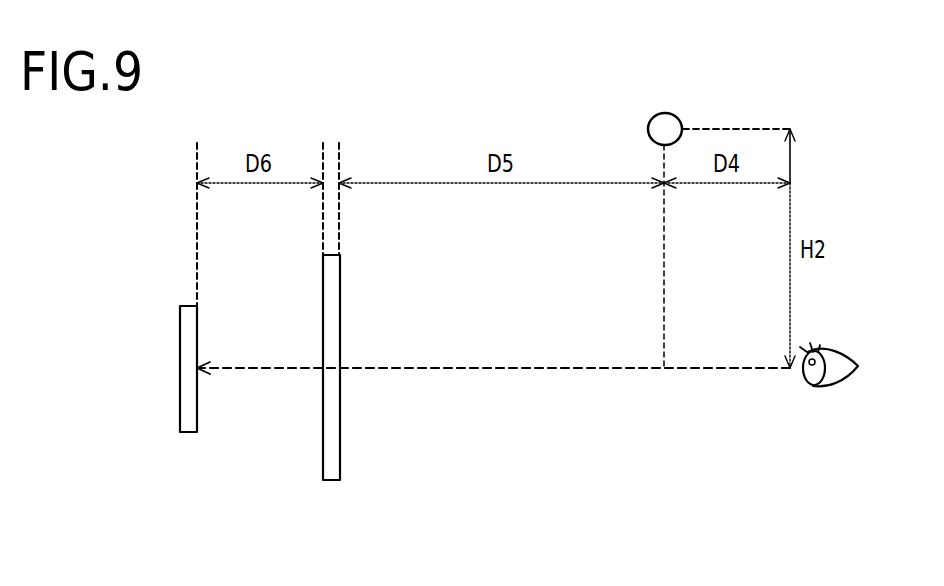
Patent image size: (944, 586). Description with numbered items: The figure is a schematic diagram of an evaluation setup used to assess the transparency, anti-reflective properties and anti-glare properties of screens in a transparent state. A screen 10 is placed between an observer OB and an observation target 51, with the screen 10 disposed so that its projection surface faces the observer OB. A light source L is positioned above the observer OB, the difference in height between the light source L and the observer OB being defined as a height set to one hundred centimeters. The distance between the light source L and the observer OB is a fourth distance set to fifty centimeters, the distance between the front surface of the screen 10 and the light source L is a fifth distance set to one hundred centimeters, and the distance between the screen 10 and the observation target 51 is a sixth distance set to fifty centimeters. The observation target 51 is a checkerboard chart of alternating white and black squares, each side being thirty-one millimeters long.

The observation target 51 is at (188, 432).
The screen 10 is at (334, 480).
The light source L is at (648, 119).
The observer OB is at (846, 354).